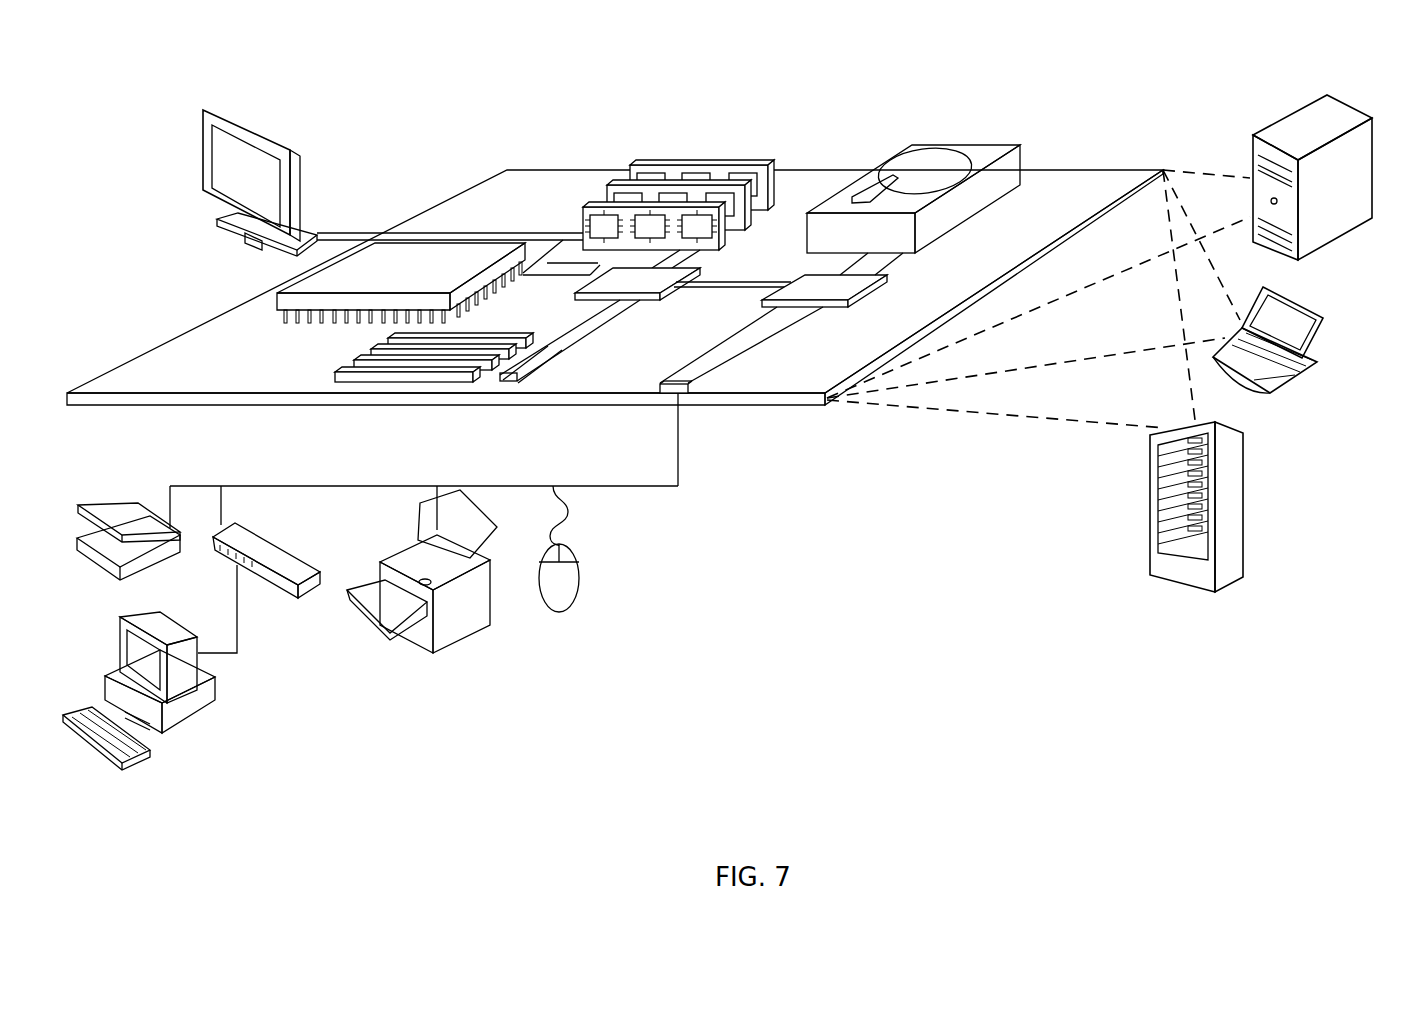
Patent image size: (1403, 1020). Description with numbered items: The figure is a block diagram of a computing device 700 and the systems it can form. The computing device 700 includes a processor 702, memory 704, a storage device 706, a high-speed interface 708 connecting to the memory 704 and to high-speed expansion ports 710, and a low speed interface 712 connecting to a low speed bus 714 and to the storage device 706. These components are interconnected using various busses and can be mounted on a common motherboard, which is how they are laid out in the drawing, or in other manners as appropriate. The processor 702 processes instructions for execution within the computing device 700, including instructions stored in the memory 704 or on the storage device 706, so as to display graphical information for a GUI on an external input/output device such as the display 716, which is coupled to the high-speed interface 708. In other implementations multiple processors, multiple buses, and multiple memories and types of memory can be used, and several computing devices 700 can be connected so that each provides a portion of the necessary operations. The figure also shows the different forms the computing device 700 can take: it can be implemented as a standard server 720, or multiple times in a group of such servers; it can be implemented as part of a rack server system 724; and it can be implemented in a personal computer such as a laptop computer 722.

The computing device 700 is at (420, 136).
The processor 702 is at (277, 300).
The memory 704 is at (653, 159).
The storage device 706 is at (908, 146).
The high-speed interface 708 is at (612, 282).
The high-speed expansion ports 710 is at (353, 362).
The low speed interface 712 is at (802, 285).
The low speed bus 714 is at (690, 396).
The display 716 is at (203, 110).
The standard server 720 is at (1253, 152).
The laptop computer 722 is at (1322, 318).
The rack server system 724 is at (1150, 532).